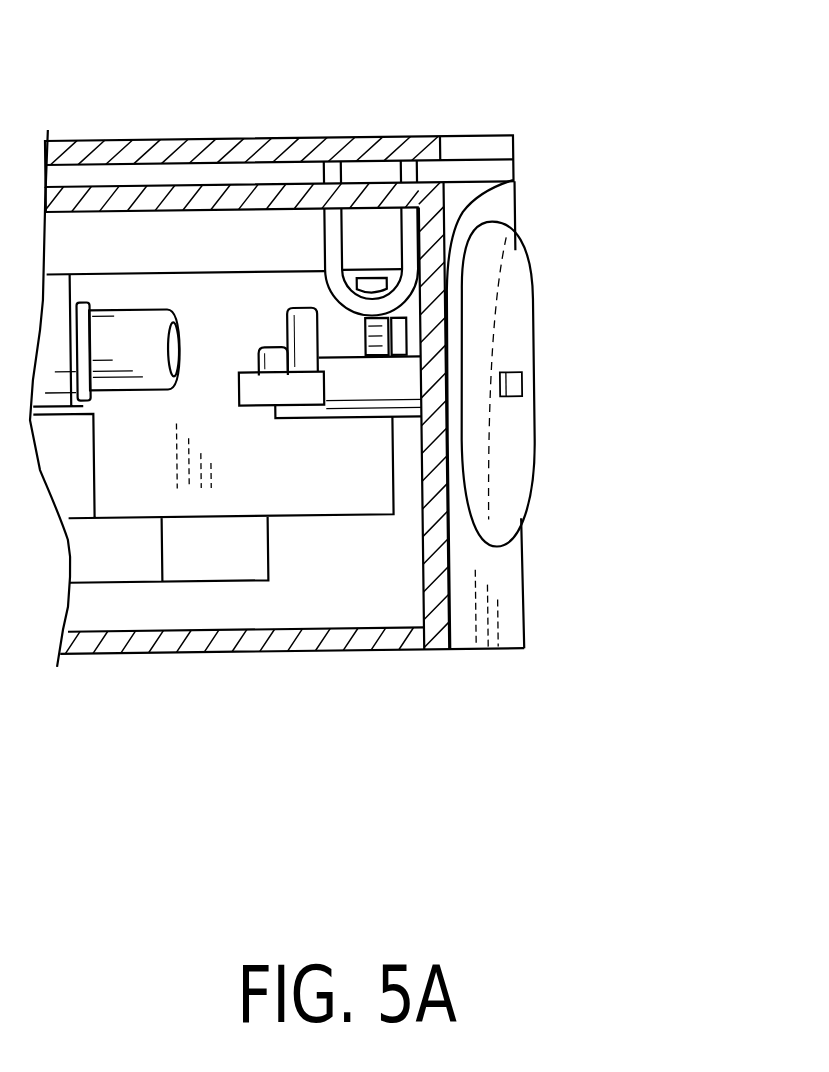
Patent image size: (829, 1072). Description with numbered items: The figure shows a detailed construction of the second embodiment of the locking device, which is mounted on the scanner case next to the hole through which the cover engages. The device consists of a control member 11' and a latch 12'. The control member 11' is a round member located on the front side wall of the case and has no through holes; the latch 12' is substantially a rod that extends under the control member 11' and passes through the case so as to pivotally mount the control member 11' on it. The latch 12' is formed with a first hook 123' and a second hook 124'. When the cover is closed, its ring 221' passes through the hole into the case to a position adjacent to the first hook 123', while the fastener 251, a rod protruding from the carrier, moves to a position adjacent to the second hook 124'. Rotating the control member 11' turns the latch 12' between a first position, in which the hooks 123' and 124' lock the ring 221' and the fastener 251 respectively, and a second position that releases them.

The fastener 251 is at (298, 315).
The ring 221' is at (393, 185).
The first hook 123' is at (544, 394).
The control member 11' is at (568, 383).
The second hook 124' is at (254, 552).
The latch 12' is at (350, 549).